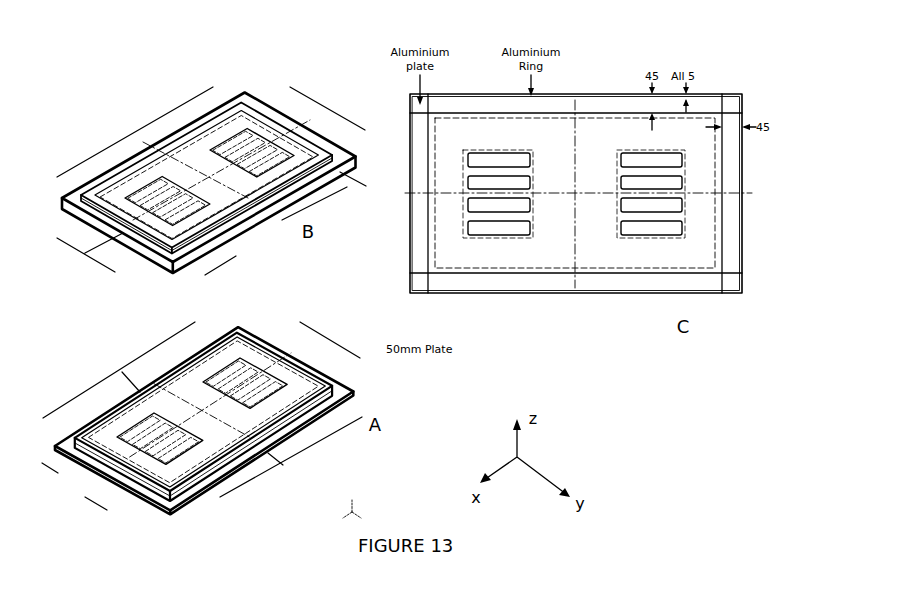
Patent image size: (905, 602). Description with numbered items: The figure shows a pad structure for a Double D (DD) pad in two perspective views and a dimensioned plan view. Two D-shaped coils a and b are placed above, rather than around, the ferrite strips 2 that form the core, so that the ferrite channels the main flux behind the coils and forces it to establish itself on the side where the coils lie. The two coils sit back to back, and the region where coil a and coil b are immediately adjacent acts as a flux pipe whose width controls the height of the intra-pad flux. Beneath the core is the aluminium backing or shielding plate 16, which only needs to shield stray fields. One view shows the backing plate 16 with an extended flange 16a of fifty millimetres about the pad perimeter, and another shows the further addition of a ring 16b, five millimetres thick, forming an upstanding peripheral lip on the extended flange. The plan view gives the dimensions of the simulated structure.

The backing plate 16 is at (167, 270).
The extended flange 16a is at (83, 453).
The ring 16b is at (285, 125).
The ferrite strips 2 is at (652, 212).
The coil a is at (148, 178).
The coil b is at (497, 279).